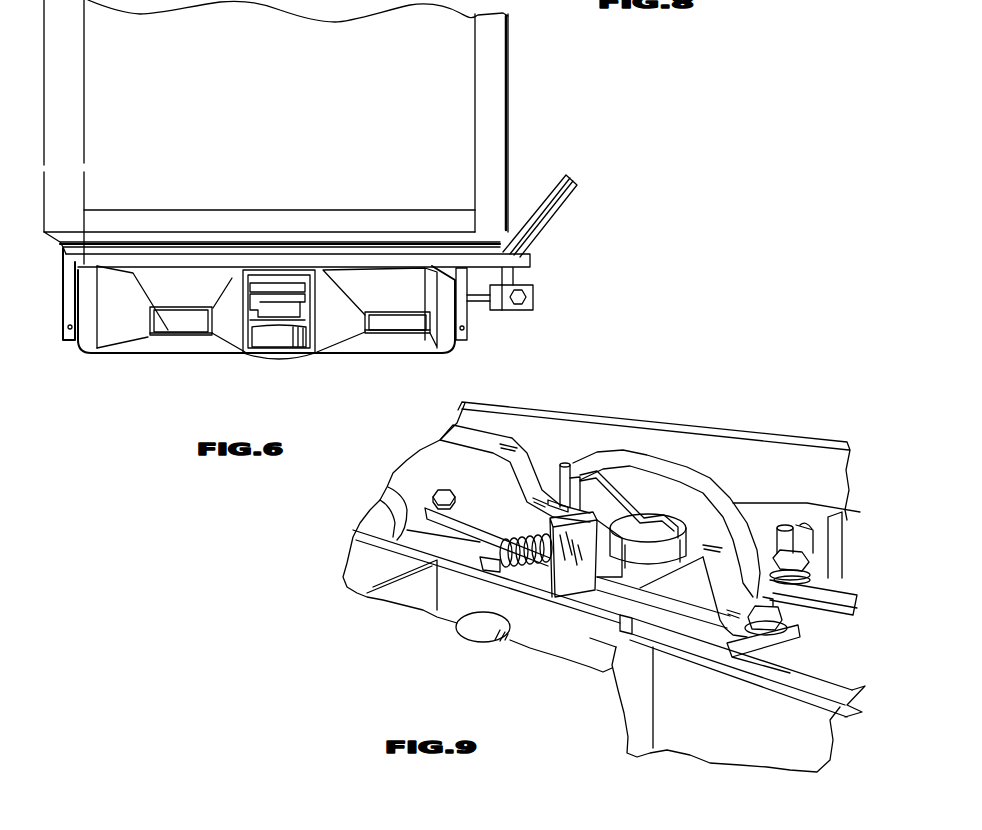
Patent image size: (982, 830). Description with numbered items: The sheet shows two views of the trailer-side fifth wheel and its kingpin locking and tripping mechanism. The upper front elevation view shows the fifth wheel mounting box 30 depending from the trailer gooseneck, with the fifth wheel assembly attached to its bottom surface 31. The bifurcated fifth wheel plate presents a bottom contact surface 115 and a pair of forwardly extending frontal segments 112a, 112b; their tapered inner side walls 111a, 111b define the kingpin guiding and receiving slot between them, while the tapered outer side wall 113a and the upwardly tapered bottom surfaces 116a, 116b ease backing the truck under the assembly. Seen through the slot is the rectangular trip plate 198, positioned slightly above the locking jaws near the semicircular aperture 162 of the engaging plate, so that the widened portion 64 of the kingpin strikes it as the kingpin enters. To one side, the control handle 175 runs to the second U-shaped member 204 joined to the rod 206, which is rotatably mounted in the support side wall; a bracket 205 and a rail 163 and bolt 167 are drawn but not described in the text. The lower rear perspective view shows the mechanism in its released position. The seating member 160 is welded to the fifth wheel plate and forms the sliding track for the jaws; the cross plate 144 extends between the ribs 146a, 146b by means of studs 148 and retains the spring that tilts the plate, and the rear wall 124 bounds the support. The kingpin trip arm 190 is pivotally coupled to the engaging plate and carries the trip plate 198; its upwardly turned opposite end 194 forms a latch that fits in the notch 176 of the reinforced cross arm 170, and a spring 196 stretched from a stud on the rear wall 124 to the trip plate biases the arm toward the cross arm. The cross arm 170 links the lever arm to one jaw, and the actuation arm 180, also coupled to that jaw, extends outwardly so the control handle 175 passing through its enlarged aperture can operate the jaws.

In FIG. 6, the fifth wheel mounting box 30 is at (514, 85).
In FIG. 6, the bottom surface 31 is at (478, 238).
In FIG. 6, the control handle 175 is at (545, 213).
In FIG. 6, the bottom contact surface 115 is at (415, 355).
In FIG. 6, the tapered outer side wall 113a is at (147, 314).
In FIG. 6, the tapered inner side wall 111a is at (230, 285).
In FIG. 6, the tapered inner side wall 111b is at (340, 302).
In FIG. 6, the bottom surface 116a is at (193, 345).
In FIG. 6, the bottom surface 116b is at (397, 340).
In FIG. 6, the frontal segment 112a is at (153, 338).
In FIG. 6, the frontal segment 112b is at (374, 345).
In FIG. 6, the trip plate 198 is at (275, 300).
In FIG. 9, the trip plate 198 is at (618, 517).
In FIG. 6, the semicircular aperture 162 is at (280, 313).
In FIG. 6, the mounting bracket 205 is at (467, 290).
In FIG. 6, the rod 206 is at (473, 302).
In FIG. 6, the second U-shaped member 204 is at (533, 300).
In FIG. 9, the rear wall 124 is at (690, 740).
In FIG. 9, the cross plate 144 is at (573, 648).
In FIG. 9, the rib 146a is at (390, 573).
In FIG. 9, the rib 146b is at (623, 687).
In FIG. 9, the stud 148 is at (497, 625).
In FIG. 9, the seating member 160 is at (852, 700).
In FIG. 9, the actuation arm 180 is at (478, 432).
In FIG. 9, the rail 163 is at (833, 583).
In FIG. 9, the bolt 167 is at (787, 567).
In FIG. 9, the kingpin trip arm 190 is at (412, 494).
In FIG. 9, the spring 196 is at (527, 537).
In FIG. 9, the opposite end 194 is at (590, 515).
In FIG. 9, the notch 176 is at (668, 510).
In FIG. 9, the widened portion 64 is at (663, 562).
In FIG. 9, the cross arm 170 is at (721, 480).